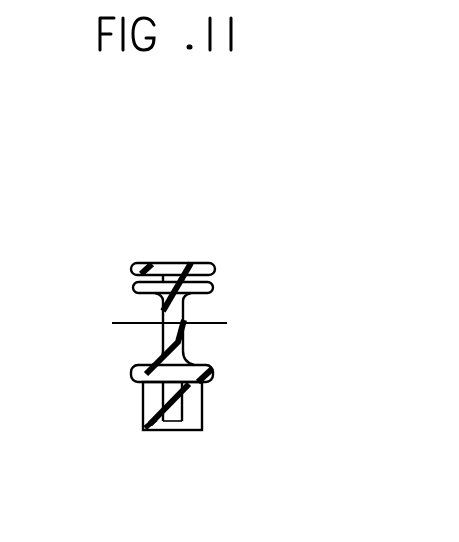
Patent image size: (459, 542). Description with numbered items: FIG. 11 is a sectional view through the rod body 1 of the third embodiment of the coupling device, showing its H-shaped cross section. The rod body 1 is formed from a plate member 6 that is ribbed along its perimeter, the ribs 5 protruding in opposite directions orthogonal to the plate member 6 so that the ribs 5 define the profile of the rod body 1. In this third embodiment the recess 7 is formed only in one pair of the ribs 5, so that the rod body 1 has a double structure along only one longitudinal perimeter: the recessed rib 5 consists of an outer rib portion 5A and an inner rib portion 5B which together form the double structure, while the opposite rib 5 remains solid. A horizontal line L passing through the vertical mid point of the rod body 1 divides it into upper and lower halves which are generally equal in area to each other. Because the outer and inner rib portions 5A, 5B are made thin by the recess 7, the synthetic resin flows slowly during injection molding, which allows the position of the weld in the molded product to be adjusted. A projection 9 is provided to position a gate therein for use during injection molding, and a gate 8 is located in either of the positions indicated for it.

The rod body 1 is at (185, 195).
The outer rib portion 5A is at (203, 266).
The inner rib portion 5B is at (211, 291).
The recess 7 is at (213, 279).
The plate member 6 is at (183, 338).
The horizontal line L is at (120, 324).
The rib 5 is at (213, 378).
The gate 8 is at (170, 430).
The projection 9 is at (132, 400).